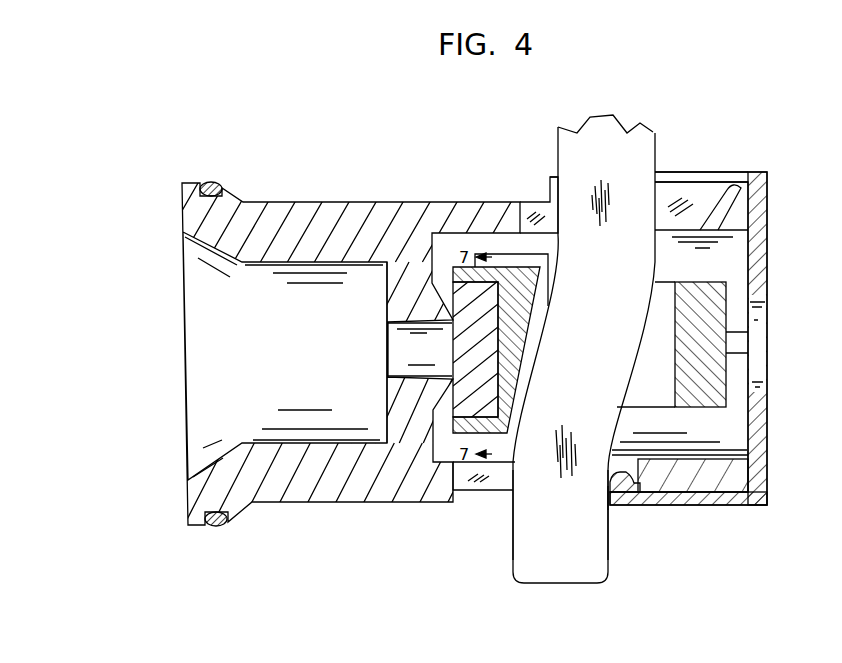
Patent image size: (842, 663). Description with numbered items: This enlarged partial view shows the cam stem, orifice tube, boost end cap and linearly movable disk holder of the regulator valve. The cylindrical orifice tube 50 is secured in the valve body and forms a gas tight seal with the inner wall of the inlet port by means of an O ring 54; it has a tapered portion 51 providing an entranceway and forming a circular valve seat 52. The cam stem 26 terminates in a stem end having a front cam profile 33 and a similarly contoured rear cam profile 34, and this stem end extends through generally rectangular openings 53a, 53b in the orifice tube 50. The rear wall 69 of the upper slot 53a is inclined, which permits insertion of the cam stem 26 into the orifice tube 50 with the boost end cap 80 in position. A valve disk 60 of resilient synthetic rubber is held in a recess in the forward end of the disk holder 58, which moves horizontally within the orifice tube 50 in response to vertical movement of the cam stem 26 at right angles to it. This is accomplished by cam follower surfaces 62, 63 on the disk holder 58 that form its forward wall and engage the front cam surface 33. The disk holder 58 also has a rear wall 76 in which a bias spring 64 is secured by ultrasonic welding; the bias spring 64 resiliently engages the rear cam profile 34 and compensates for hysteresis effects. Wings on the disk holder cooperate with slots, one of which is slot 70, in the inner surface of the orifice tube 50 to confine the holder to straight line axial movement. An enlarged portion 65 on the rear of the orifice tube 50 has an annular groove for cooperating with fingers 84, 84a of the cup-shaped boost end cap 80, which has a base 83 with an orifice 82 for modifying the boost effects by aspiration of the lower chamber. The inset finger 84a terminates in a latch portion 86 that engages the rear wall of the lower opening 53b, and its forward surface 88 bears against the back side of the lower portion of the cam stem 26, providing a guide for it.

The cam stem 26 is at (658, 144).
The front cam profile 33 is at (513, 498).
The rear cam profile 34 is at (609, 522).
The orifice tube 50 is at (354, 201).
The tapered portion 51 is at (185, 357).
The valve seat 52 is at (388, 334).
The upper rectangular opening 53a is at (533, 202).
The lower rectangular opening 53b is at (470, 490).
The O ring 54 is at (212, 182).
The disk holder 58 is at (497, 305).
The valve disk 60 is at (388, 358).
The cam follower surface 62 is at (528, 360).
The cam follower surface 63 is at (545, 305).
The bias spring 64 is at (647, 343).
The enlarged portion 65 is at (547, 177).
The rear wall of upper slot 69 is at (733, 186).
The slot 70 is at (737, 332).
The rear wall 76 is at (678, 393).
The boost end cap 80 is at (769, 201).
The orifice 82 is at (762, 349).
The base 83 is at (768, 233).
The fingers 84 is at (703, 172).
The finger 84a is at (717, 506).
The latch portion 86 is at (630, 506).
The surface 88 is at (608, 503).